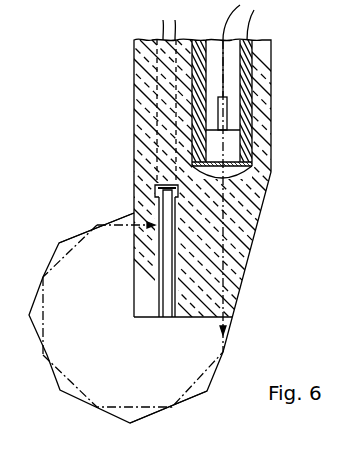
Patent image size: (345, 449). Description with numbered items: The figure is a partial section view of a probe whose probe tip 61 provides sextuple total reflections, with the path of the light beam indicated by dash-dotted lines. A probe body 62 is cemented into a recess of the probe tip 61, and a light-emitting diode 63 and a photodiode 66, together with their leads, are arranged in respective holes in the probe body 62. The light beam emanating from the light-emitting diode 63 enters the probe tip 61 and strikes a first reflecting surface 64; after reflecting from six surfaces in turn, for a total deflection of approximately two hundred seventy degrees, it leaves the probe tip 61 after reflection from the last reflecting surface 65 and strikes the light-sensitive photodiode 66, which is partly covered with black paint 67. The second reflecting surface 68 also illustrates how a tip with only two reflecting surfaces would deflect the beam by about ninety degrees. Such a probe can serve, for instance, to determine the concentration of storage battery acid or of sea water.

The probe tip 61 is at (63, 332).
The probe body 62 is at (236, 278).
The light-emitting diode 63 is at (250, 165).
The first reflecting surface 64 is at (226, 345).
The last reflecting surface 65 is at (93, 229).
The photodiode 66 is at (156, 226).
The black paint 67 is at (158, 288).
The second reflecting surface 68 is at (181, 401).